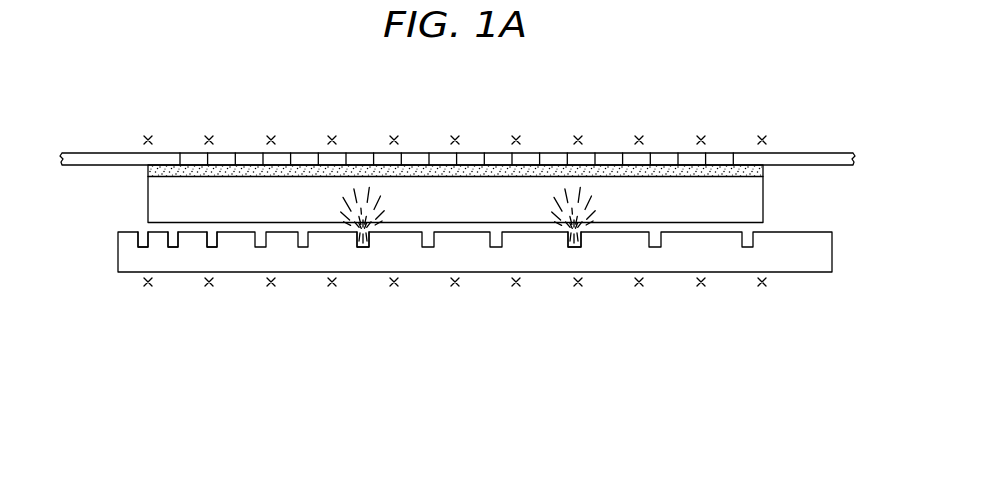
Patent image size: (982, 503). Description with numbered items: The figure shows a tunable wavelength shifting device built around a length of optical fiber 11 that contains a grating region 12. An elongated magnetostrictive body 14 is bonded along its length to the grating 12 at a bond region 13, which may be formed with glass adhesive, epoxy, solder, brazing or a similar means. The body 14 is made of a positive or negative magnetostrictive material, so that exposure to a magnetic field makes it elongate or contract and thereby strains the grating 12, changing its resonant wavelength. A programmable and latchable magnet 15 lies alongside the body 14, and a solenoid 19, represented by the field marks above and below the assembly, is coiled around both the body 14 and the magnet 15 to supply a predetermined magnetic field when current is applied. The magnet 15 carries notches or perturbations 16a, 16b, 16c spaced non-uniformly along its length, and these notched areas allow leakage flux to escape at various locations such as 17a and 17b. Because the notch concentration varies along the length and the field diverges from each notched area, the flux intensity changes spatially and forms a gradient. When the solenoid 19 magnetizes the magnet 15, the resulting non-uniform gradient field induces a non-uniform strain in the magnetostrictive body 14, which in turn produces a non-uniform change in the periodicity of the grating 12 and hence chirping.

The optical fiber 11 is at (103, 157).
The grating region 12 is at (246, 135).
The bond region 13 is at (763, 168).
The magnetostrictive body 14 is at (160, 202).
The latchable magnet 15 is at (537, 262).
The notch 16a is at (143, 248).
The notch 16b is at (175, 248).
The notch 16c is at (213, 248).
The leakage flux location 17a is at (363, 248).
The leakage flux location 17b is at (577, 248).
The solenoid 19 is at (333, 132).